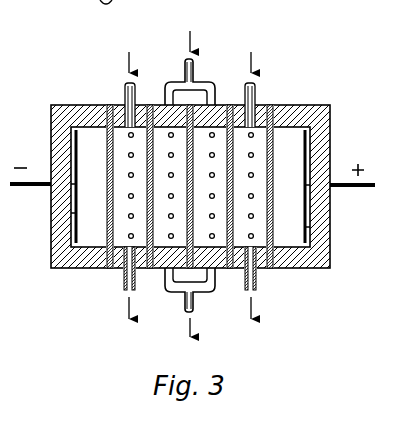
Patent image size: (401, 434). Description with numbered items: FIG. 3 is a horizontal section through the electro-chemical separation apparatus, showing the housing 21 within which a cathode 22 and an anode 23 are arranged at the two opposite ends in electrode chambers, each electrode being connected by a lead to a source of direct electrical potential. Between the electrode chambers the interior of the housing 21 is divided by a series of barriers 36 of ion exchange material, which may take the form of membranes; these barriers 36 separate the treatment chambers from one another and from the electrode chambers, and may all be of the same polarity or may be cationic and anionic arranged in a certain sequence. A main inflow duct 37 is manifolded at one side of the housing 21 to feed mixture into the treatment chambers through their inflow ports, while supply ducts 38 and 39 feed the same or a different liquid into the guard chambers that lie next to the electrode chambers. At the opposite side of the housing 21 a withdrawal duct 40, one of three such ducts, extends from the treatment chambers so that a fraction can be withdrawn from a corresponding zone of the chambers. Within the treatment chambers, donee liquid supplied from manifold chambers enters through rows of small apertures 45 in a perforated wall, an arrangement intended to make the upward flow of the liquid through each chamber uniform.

The housing 21 is at (327, 134).
The cathode 22 is at (71, 213).
The anode 23 is at (307, 228).
The barriers of ion exchange material 36 is at (107, 177).
The main inflow duct 37 is at (193, 68).
The supply duct 38 is at (126, 97).
The supply duct 39 is at (256, 96).
The withdrawal duct 40 is at (180, 290).
The small apertures 45 is at (170, 138).